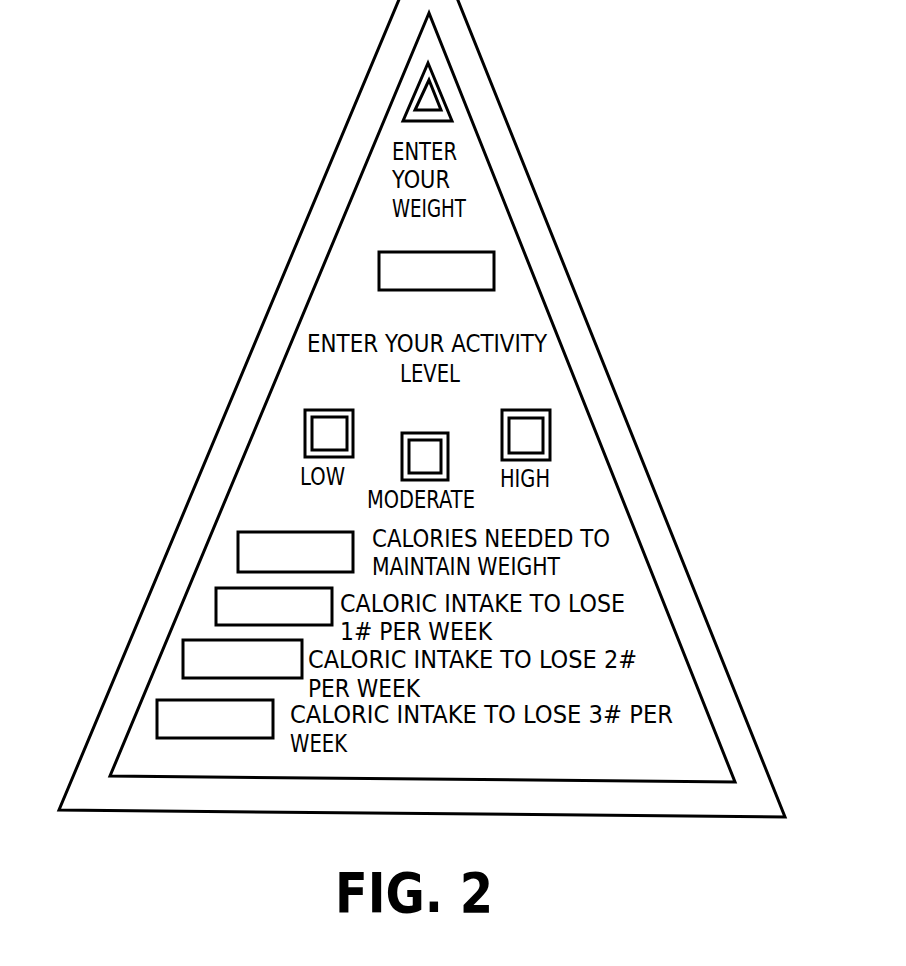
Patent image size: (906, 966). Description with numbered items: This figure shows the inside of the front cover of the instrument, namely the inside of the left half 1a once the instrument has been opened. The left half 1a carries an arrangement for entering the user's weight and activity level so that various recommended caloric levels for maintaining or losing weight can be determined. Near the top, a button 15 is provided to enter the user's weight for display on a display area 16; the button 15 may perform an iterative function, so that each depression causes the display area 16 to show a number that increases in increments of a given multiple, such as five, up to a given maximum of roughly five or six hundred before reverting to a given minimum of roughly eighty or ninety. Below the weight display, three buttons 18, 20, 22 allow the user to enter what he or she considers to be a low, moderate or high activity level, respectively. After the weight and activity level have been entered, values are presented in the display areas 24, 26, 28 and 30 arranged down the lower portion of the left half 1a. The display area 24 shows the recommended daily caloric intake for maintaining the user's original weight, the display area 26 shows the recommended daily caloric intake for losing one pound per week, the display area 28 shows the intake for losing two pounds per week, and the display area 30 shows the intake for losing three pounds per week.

The left half 1a is at (226, 295).
The button 15 is at (433, 105).
The display area 16 is at (485, 272).
The button 18 is at (330, 432).
The button 20 is at (430, 455).
The button 22 is at (530, 440).
The display area 24 is at (243, 548).
The display area 26 is at (213, 603).
The display area 28 is at (190, 655).
The display area 30 is at (158, 719).